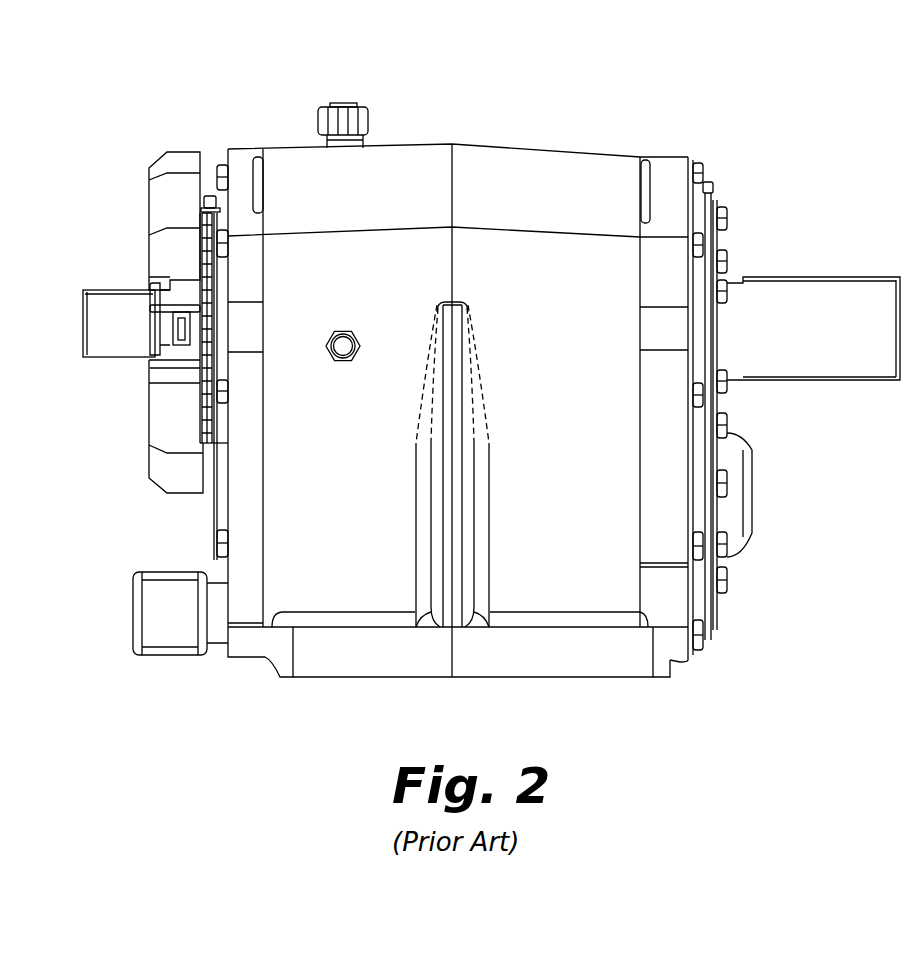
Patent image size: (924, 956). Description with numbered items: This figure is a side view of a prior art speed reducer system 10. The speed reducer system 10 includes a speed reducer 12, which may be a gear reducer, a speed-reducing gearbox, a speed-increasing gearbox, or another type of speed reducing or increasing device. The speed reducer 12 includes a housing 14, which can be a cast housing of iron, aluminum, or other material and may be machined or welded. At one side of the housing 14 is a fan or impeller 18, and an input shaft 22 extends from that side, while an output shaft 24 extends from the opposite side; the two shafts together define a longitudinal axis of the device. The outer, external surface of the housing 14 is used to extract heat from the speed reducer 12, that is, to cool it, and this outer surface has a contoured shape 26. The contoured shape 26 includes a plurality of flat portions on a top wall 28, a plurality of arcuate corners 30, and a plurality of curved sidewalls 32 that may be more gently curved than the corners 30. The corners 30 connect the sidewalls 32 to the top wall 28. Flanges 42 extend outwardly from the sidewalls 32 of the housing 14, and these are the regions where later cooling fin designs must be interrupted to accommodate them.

The speed reducer system 10 is at (785, 118).
The speed reducer 12 is at (692, 153).
The housing 14 is at (274, 148).
The fan or impeller 18 is at (149, 213).
The input shaft 22 is at (113, 338).
The output shaft 24 is at (847, 298).
The contoured shape 26 is at (593, 79).
The top wall 28 is at (400, 144).
The arcuate corners 30 is at (368, 208).
The curved sidewalls 32 is at (357, 455).
The flanges 42 is at (465, 362).